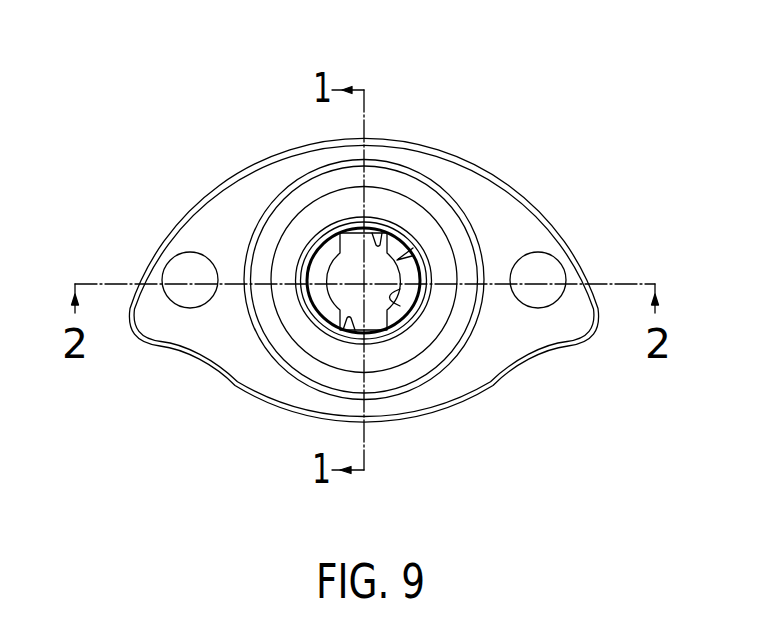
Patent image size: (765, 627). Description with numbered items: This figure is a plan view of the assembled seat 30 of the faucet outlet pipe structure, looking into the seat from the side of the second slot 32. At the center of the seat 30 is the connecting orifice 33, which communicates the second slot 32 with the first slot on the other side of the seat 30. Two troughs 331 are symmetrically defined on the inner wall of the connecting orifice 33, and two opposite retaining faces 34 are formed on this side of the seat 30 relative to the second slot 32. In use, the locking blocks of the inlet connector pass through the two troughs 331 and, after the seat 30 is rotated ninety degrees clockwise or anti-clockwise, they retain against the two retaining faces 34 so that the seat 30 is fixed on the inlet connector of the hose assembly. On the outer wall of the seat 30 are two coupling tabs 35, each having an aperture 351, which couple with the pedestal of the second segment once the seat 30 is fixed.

The seat 30 is at (478, 117).
The second slot 32 is at (398, 253).
The connecting orifice 33 is at (385, 294).
The troughs 331 is at (382, 236).
The retaining faces 34 is at (317, 256).
The coupling tabs 35 is at (187, 328).
The aperture 351 is at (183, 265).